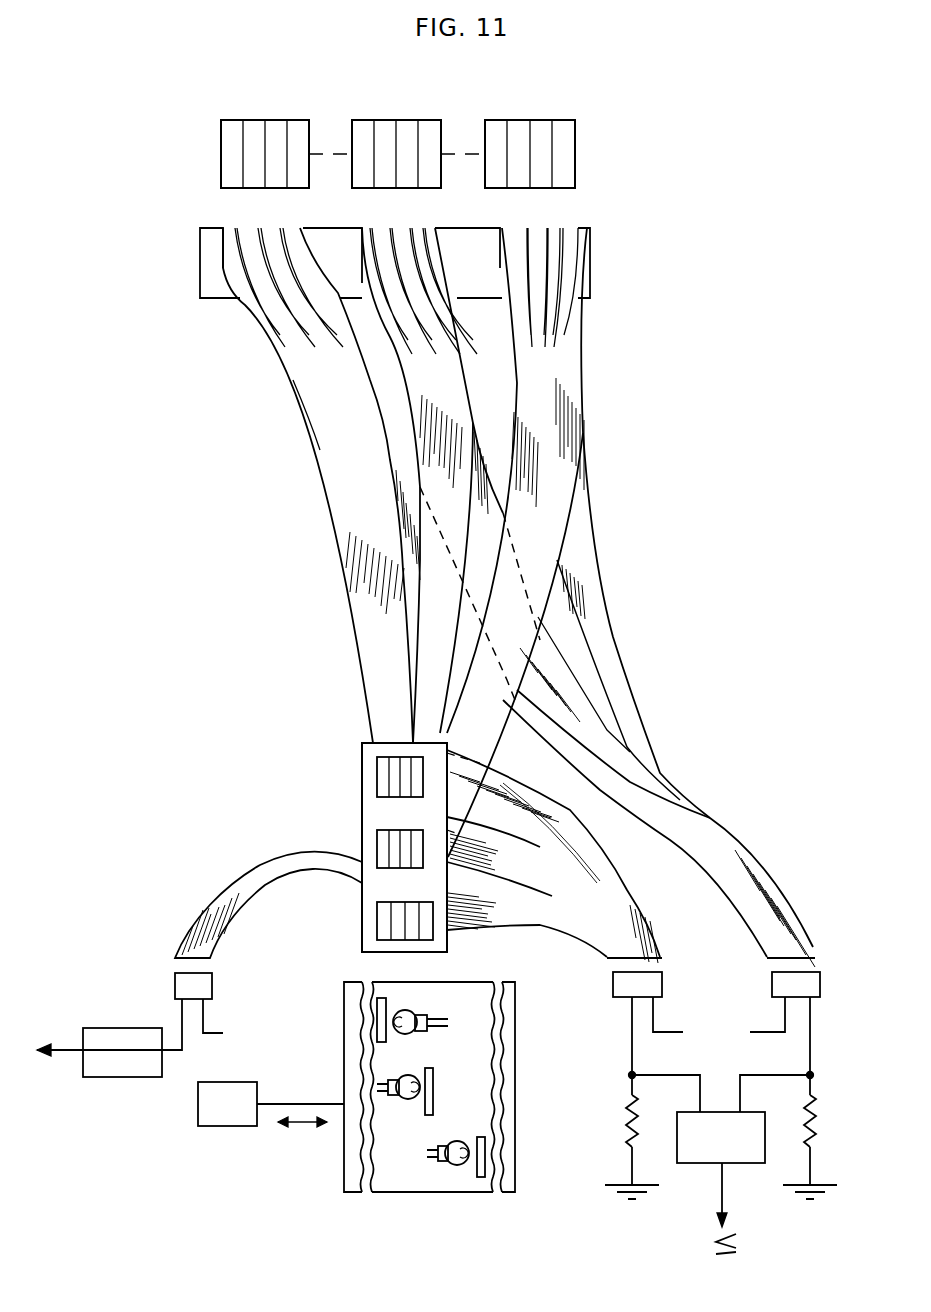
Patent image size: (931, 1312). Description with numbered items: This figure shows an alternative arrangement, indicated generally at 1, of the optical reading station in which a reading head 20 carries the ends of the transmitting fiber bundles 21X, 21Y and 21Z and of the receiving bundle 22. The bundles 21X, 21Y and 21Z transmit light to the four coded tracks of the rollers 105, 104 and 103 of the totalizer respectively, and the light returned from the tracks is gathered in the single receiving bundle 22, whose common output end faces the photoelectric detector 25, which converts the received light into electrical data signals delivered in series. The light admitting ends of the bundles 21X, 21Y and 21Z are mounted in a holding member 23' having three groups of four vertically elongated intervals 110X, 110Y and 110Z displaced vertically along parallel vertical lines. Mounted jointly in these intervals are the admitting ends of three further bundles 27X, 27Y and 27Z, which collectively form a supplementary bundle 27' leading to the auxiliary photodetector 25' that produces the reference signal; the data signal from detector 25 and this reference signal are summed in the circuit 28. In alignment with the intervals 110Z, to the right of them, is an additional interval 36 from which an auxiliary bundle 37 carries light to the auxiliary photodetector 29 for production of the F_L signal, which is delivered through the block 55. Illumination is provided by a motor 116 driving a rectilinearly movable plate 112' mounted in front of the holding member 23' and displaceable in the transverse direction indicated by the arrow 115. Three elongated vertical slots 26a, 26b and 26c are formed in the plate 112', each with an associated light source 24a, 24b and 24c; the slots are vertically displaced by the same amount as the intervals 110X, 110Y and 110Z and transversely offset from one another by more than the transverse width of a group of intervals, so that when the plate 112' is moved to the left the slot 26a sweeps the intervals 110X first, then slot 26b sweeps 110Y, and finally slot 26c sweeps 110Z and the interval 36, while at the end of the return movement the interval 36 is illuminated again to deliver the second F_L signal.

The color television camera optical system 1 is at (626, 143).
The reading head 20 is at (584, 237).
The transmitting bundle 21X is at (353, 470).
The transmitting bundle 21Y is at (430, 548).
The transmitting bundle 21Z is at (517, 538).
The receiving bundle 22 is at (665, 787).
The holding member 23' is at (395, 847).
The light source 24a is at (408, 1010).
The light source 24b is at (410, 1100).
The light source 24c is at (458, 1168).
The photoelectric detector 25 is at (800, 1083).
The auxiliary photodetector 25' is at (659, 1083).
The elongated vertical slot 26a is at (378, 1010).
The elongated vertical slot 26b is at (430, 1097).
The elongated vertical slot 26c is at (483, 1148).
The supplementary transmitting bundle 27X is at (493, 793).
The supplementary transmitting bundle 27Y is at (518, 857).
The supplementary transmitting bundle 27Z is at (502, 910).
The supplementary bundle 27' is at (655, 929).
The summing circuit 28 is at (734, 1146).
The auxiliary photodetector 29 is at (203, 988).
The additional interval 36 is at (427, 930).
The auxiliary light transmitting bundle 37 is at (255, 868).
The amplifier 55 is at (97, 1032).
The roller 103 is at (535, 128).
The roller 104 is at (413, 128).
The roller 105 is at (272, 124).
The intervals 110X is at (380, 762).
The intervals 110Y is at (377, 847).
The intervals 110Z is at (380, 920).
The movable plate 112' is at (429, 1107).
The arrow 115 is at (297, 1123).
The motor 116 is at (220, 1113).